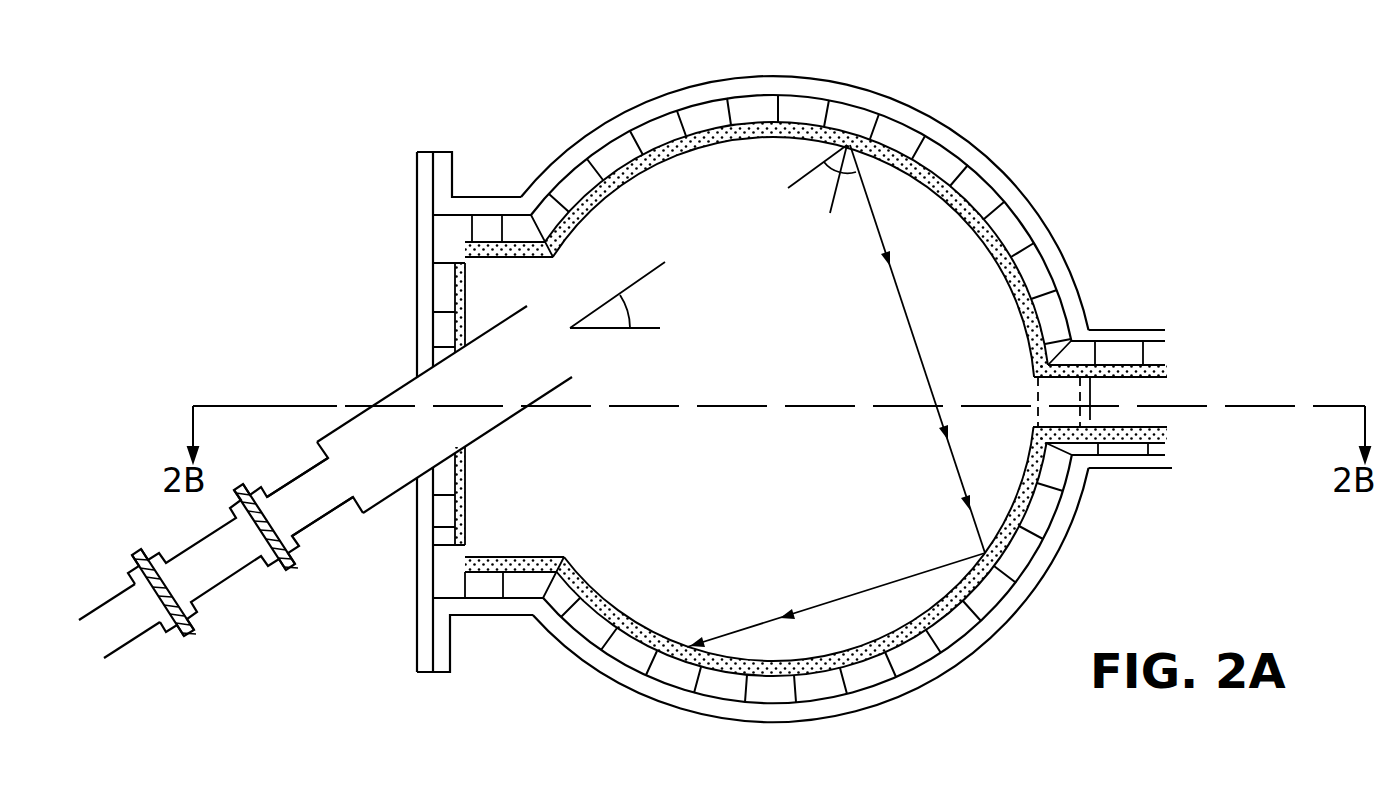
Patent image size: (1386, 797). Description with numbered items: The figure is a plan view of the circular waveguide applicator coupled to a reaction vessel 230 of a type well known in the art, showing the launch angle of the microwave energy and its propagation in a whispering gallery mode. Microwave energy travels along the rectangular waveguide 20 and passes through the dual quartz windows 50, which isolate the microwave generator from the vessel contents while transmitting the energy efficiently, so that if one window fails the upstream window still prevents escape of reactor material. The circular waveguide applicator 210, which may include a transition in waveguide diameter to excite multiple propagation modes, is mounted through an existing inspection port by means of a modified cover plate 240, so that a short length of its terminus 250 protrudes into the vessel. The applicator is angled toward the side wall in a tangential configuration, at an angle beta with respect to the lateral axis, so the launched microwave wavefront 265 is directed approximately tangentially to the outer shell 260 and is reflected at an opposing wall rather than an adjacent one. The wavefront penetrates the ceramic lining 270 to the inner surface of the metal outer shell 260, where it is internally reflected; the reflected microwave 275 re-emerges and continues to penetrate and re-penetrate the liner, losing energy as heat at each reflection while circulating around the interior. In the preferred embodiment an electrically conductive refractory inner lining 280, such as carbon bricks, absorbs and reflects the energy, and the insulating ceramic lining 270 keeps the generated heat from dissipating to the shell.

The rectangular waveguide 20 is at (96, 604).
The quartz windows 50 is at (203, 628).
The circular waveguide applicator 210 is at (353, 505).
The reaction vessel 230 is at (1190, 286).
The cover plate 240 is at (390, 282).
The terminus 250 is at (566, 380).
The outer shell 260 is at (648, 101).
The launched microwave wavefront 265 is at (768, 203).
The ceramic lining 270 is at (1002, 213).
The reflected microwave 275 is at (895, 250).
The inner lining 280 is at (628, 183).